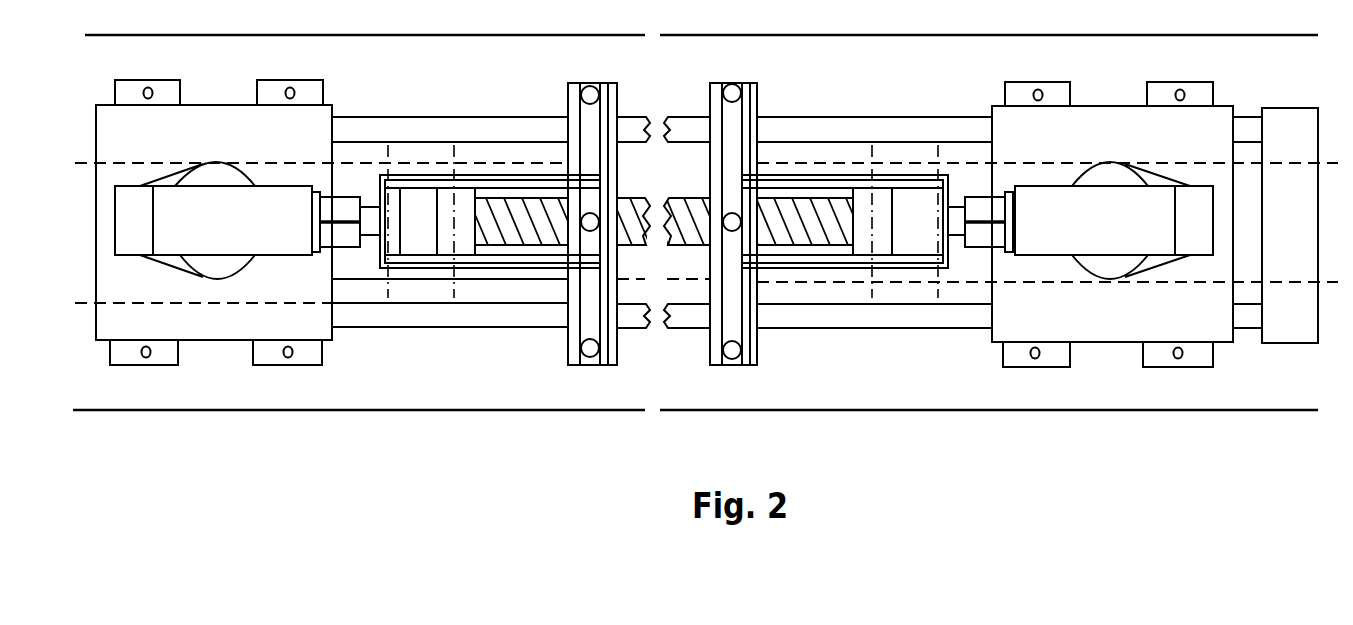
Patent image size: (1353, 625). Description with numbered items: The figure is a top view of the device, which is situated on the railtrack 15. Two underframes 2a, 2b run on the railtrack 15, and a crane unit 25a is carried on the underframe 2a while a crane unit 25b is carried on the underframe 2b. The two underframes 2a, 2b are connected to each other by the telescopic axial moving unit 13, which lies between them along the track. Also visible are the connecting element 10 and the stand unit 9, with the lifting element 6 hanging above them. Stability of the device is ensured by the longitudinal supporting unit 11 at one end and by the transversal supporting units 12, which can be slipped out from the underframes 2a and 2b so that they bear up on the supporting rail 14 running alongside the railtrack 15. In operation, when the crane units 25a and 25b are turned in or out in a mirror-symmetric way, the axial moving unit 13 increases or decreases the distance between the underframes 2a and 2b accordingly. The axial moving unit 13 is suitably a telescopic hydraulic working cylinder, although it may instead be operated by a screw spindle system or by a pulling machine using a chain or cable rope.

The underframe 2a is at (221, 203).
The underframe 2b is at (1090, 204).
The lifting element 6 is at (738, 132).
The stand unit 9 is at (572, 98).
The connecting element 10 is at (627, 132).
The longitudinal supporting unit 11 is at (1287, 121).
The transversal supporting unit 12 is at (128, 98).
The axial moving unit 13 is at (646, 207).
The supporting rail 14 is at (123, 409).
The railtrack 15 is at (97, 162).
The crane unit 25a is at (217, 181).
The crane unit 25b is at (1078, 181).